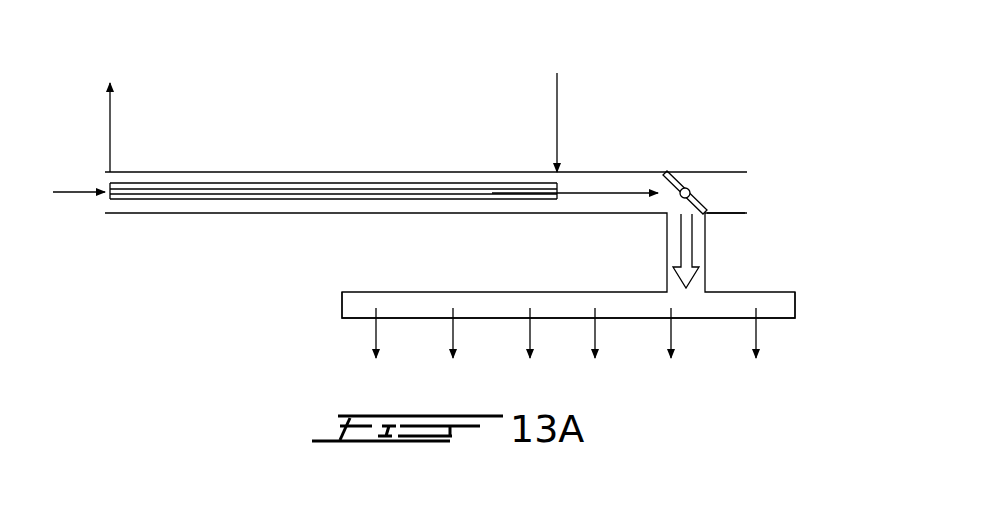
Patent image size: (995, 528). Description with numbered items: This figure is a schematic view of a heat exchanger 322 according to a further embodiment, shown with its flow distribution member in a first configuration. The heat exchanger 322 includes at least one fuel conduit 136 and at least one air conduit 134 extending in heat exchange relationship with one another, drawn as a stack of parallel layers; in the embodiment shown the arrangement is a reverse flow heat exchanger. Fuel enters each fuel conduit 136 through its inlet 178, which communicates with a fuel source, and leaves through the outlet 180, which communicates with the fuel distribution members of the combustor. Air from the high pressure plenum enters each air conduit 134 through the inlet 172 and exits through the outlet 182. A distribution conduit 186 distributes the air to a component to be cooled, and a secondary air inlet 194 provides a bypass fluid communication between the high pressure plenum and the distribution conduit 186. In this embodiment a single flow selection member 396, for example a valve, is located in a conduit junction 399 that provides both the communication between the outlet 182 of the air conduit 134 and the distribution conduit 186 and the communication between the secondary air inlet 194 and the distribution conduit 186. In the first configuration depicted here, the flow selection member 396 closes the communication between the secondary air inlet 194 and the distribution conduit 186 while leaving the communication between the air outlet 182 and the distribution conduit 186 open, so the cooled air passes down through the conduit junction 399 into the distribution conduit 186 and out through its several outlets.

The air conduit 134 is at (220, 188).
The fuel conduit 136 is at (280, 188).
The inlet of air conduit 172 is at (67, 194).
The inlet of fuel conduit 178 is at (560, 102).
The outlet of fuel conduit 180 is at (108, 127).
The outlet of air conduit 182 is at (565, 202).
The distribution conduit 186 is at (340, 302).
The secondary air inlet 194 is at (735, 196).
The heat exchanger 322 is at (766, 122).
The flow selection member 396 is at (674, 172).
The conduit junction 399 is at (672, 203).